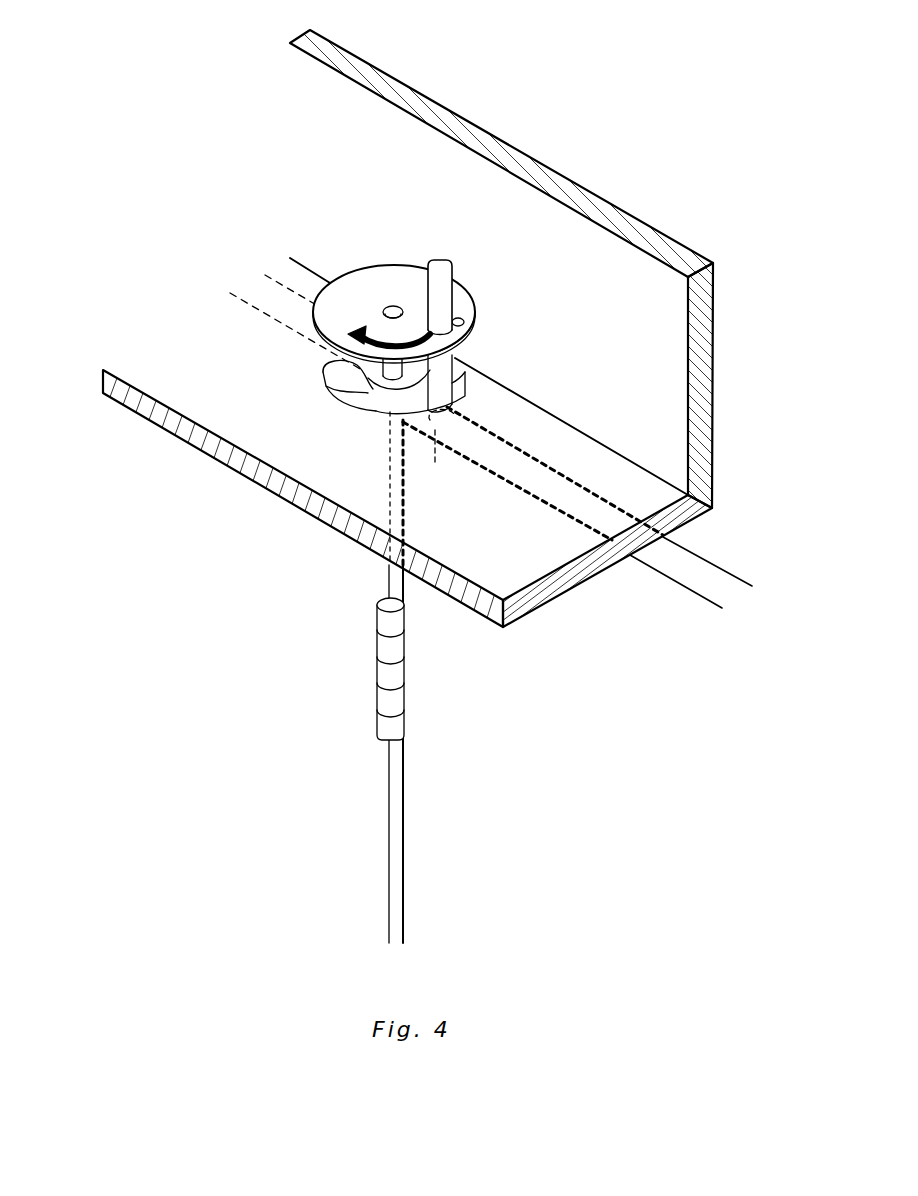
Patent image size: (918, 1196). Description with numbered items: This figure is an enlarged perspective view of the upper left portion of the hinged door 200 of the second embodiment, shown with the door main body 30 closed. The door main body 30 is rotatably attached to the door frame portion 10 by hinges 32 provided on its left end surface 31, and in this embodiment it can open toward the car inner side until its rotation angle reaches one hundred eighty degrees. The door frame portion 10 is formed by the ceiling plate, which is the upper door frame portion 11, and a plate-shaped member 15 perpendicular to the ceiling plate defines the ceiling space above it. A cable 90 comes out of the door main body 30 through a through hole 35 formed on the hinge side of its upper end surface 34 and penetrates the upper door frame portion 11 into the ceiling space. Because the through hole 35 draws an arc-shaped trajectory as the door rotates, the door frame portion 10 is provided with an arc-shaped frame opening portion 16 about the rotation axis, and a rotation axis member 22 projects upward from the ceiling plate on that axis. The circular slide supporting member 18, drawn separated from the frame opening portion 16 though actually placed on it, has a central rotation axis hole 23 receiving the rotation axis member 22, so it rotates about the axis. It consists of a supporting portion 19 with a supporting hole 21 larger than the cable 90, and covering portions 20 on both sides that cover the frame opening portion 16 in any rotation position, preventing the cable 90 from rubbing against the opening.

The hinged door 200 is at (615, 138).
The door frame portion 10 is at (540, 605).
The upper door frame portion 11 is at (575, 589).
The plate-shaped member 15 is at (705, 380).
The frame opening portion 16 is at (335, 397).
The slide supporting member 18 is at (381, 268).
The supporting portion 19 is at (464, 320).
The covering portion 20 is at (318, 320).
The supporting hole 21 is at (461, 326).
The rotation axis member 22 is at (381, 385).
The rotation axis hole 23 is at (402, 300).
The door main body 30 is at (740, 568).
The left end surface 31 is at (400, 775).
The hinge 32 is at (390, 668).
The upper end surface 34 is at (702, 565).
The through hole 35 is at (440, 452).
The cable 90 is at (452, 262).